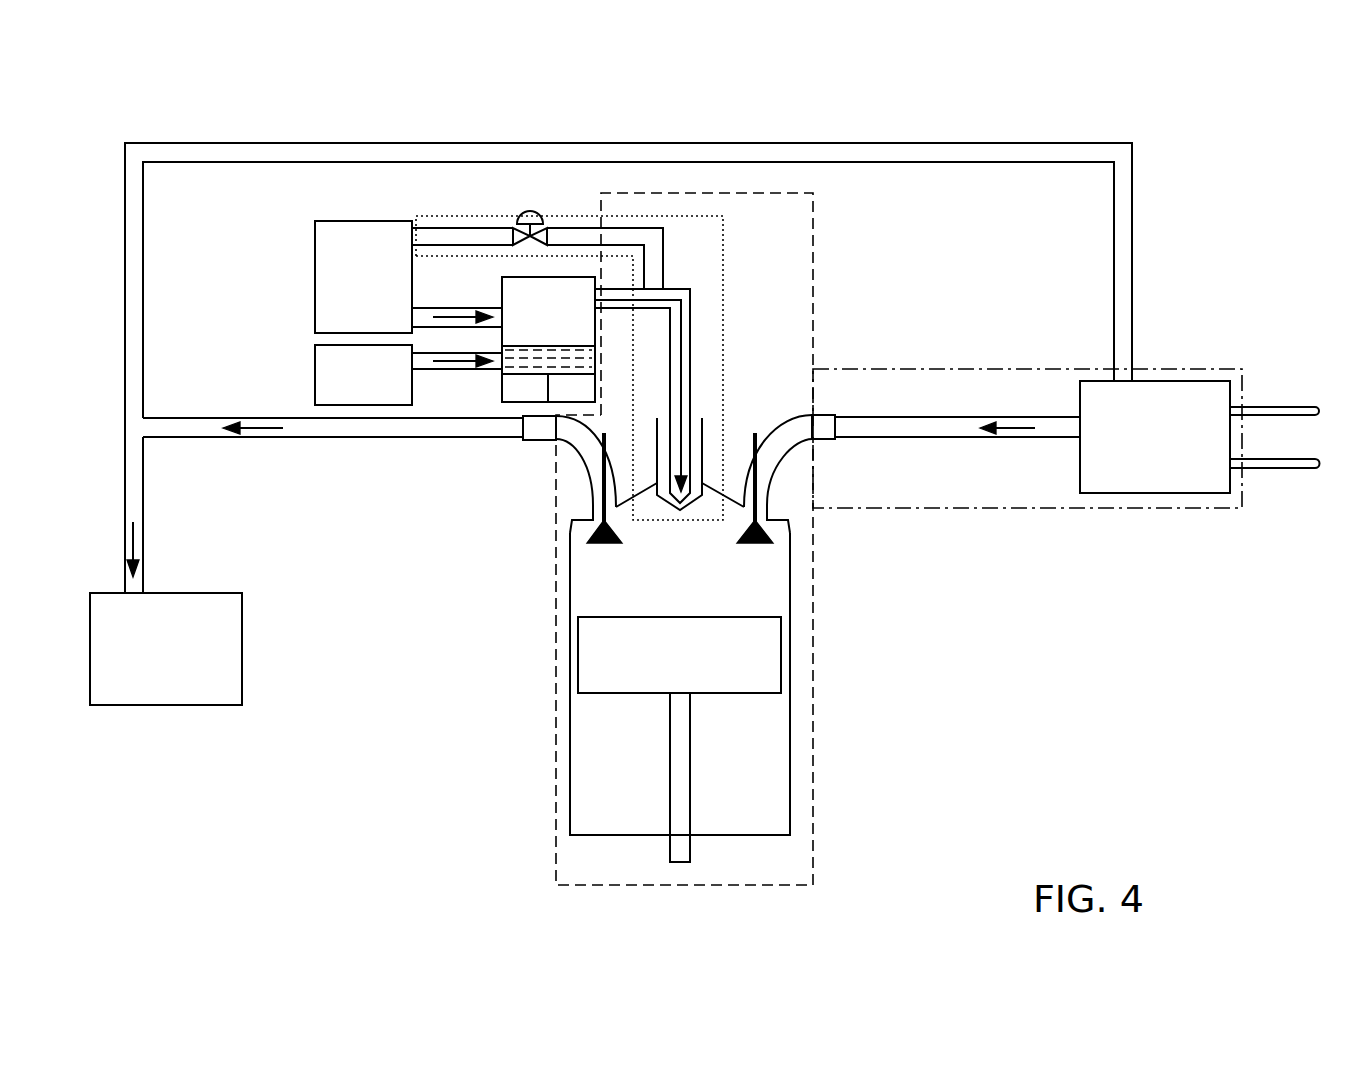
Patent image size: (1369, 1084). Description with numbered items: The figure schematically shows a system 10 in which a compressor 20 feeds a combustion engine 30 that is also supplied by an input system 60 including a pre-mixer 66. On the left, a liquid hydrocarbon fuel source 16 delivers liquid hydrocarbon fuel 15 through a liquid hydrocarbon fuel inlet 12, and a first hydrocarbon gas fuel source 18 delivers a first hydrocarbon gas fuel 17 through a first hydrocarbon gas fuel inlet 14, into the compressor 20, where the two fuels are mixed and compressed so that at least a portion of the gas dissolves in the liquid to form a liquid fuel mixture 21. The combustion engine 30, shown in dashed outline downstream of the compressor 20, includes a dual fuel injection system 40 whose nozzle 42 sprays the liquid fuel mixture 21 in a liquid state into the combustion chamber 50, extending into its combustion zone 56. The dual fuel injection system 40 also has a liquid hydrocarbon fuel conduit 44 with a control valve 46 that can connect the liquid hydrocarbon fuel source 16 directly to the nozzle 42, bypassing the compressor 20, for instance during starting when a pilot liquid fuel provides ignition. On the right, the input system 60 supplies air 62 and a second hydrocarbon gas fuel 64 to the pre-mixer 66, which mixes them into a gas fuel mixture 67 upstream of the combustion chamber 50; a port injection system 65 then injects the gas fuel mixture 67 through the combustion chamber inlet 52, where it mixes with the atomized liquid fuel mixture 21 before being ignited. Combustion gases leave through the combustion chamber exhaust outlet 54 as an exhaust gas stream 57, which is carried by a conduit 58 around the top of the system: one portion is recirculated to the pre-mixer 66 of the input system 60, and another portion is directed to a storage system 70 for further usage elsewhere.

The system 10 is at (1172, 767).
The liquid hydrocarbon fuel inlet 12 is at (490, 306).
The first hydrocarbon gas fuel inlet 14 is at (489, 372).
The liquid hydrocarbon fuel 15 is at (446, 312).
The liquid hydrocarbon fuel source 16 is at (348, 290).
The first hydrocarbon gas fuel 17 is at (446, 372).
The first hydrocarbon gas fuel source 18 is at (348, 383).
The compressor 20 is at (513, 406).
The liquid fuel mixture 21 is at (556, 345).
The combustion engine 30 is at (813, 258).
The dual fuel injection system 40 is at (724, 280).
The nozzle 42 is at (683, 360).
The liquid hydrocarbon fuel conduit 44 is at (461, 227).
The control valve 46 is at (537, 214).
The combustion chamber 50 is at (791, 735).
The combustion chamber inlet 52 is at (770, 503).
The combustion chamber exhaust outlet 54 is at (590, 503).
The combustion zone 56 is at (666, 591).
The exhaust gas stream 57 is at (259, 426).
The conduit 58 is at (335, 440).
The input system 60 is at (965, 369).
The air 62 is at (1300, 478).
The second hydrocarbon gas fuel 64 is at (1292, 402).
The port injection system 65 is at (958, 440).
The pre-mixer 66 is at (1141, 450).
The gas fuel mixture 67 is at (1015, 421).
The storage system 70 is at (152, 658).